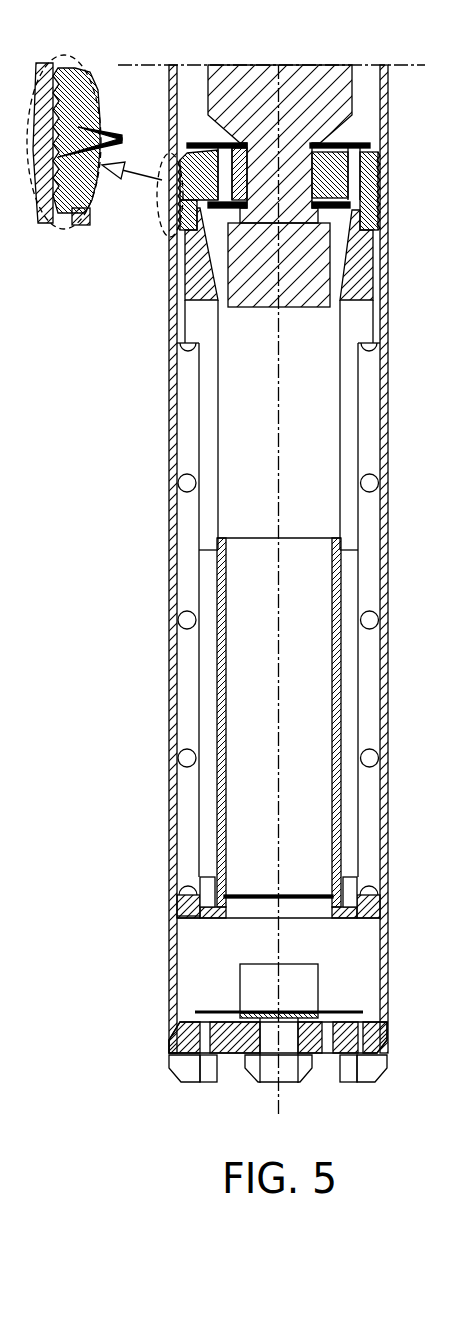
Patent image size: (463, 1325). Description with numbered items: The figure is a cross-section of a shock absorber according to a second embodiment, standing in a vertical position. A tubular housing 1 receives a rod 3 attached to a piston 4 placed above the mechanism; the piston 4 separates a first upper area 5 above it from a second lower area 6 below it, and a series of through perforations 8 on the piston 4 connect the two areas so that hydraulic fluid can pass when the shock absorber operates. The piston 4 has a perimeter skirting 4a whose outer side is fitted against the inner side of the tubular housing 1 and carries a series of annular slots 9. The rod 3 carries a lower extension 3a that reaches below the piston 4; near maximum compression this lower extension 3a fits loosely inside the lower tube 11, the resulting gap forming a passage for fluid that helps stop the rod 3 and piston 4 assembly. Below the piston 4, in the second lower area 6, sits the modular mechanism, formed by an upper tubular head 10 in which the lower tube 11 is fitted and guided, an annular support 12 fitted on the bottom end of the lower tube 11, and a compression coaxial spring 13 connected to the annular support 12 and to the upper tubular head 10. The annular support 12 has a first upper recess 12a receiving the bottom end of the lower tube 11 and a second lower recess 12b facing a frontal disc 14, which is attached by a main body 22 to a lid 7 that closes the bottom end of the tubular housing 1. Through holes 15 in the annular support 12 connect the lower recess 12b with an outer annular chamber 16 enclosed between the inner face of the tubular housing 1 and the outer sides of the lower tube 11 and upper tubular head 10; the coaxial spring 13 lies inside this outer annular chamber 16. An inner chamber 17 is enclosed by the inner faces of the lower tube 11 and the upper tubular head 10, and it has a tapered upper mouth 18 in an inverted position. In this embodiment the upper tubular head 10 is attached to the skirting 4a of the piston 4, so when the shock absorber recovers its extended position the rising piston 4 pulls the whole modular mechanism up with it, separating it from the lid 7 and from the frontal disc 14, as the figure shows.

The tubular housing 1 is at (46, 60).
The rod 3 is at (353, 78).
The lower extension 3a is at (292, 267).
The piston 4 is at (352, 180).
The perimeter skirting 4a is at (76, 183).
The first upper area 5 is at (367, 118).
The second lower area 6 is at (350, 697).
The lid 7 is at (393, 1042).
The through perforations 8 is at (223, 177).
The annular slots 9 is at (101, 141).
The upper tubular head 10 is at (202, 283).
The lower tube 11 is at (343, 798).
The annular support 12 is at (297, 890).
The first upper recess 12a is at (222, 895).
The second lower recess 12b is at (197, 912).
The compression coaxial spring 13 is at (363, 760).
The frontal disc 14 is at (347, 1008).
The through holes 15 is at (207, 893).
The outer annular chamber 16 is at (370, 692).
The inner chamber 17 is at (255, 762).
The tapered upper mouth 18 is at (345, 258).
The main body 22 is at (258, 992).